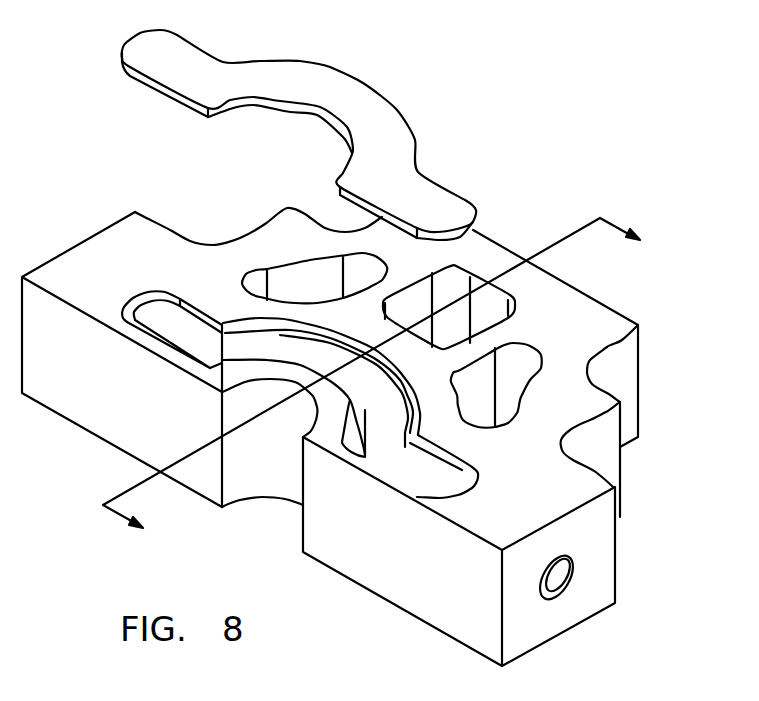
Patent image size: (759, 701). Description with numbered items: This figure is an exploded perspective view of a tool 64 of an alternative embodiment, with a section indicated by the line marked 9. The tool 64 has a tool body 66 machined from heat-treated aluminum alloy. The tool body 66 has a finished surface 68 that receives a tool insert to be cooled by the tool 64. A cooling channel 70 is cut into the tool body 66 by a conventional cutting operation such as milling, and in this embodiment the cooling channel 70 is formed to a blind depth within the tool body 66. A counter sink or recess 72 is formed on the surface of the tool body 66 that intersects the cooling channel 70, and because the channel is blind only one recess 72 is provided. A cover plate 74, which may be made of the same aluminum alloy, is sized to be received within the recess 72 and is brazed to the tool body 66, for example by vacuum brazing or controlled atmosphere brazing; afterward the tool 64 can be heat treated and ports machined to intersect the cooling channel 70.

The tool 64 is at (525, 163).
The tool body 66 is at (618, 580).
The finished surface 68 is at (271, 466).
The cooling channel 70 is at (448, 481).
The recess 72 is at (133, 297).
The cover plate 74 is at (173, 64).
The section line 9- 9 is at (370, 374).